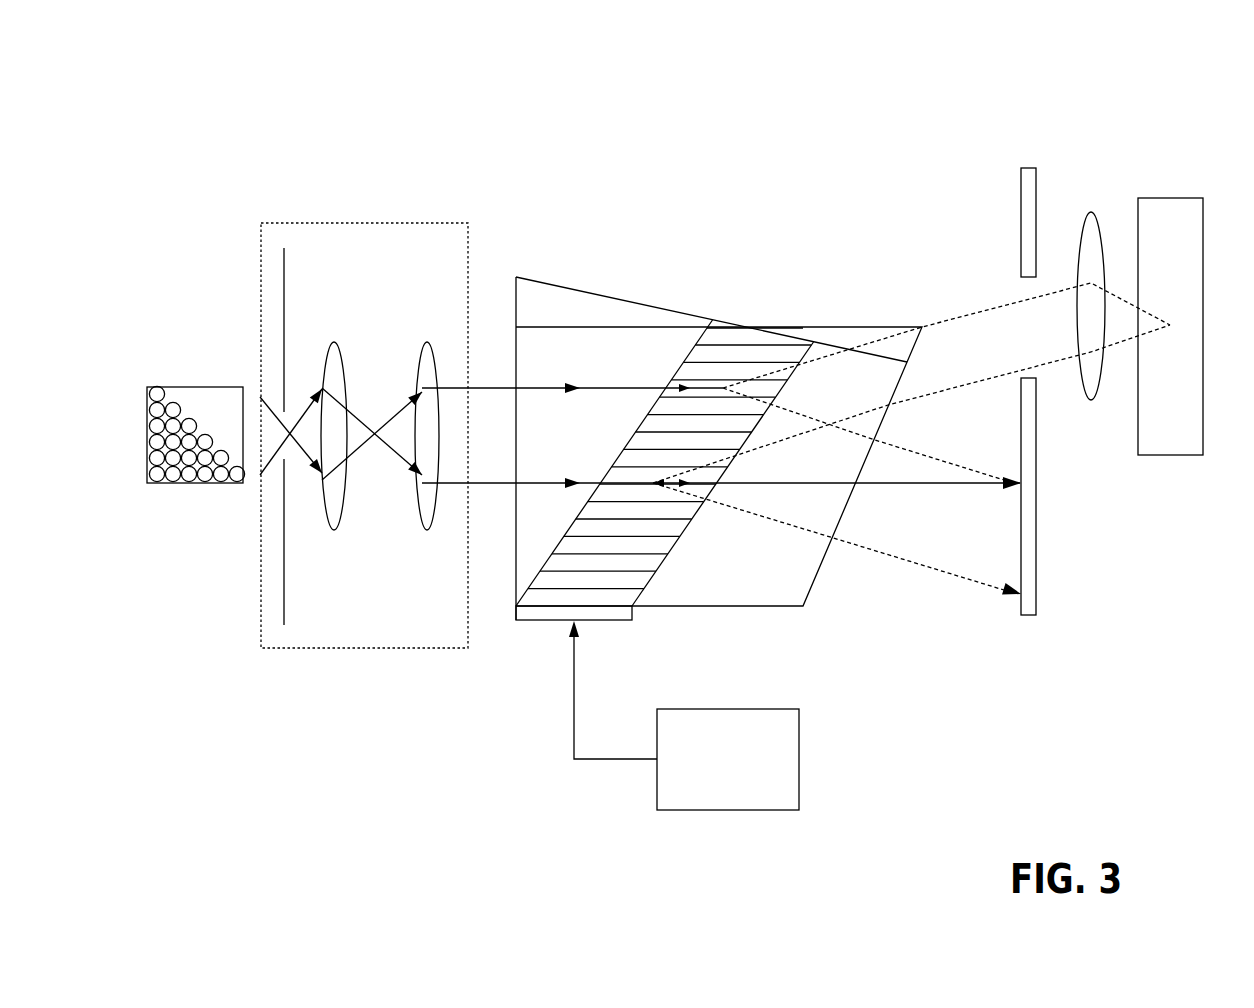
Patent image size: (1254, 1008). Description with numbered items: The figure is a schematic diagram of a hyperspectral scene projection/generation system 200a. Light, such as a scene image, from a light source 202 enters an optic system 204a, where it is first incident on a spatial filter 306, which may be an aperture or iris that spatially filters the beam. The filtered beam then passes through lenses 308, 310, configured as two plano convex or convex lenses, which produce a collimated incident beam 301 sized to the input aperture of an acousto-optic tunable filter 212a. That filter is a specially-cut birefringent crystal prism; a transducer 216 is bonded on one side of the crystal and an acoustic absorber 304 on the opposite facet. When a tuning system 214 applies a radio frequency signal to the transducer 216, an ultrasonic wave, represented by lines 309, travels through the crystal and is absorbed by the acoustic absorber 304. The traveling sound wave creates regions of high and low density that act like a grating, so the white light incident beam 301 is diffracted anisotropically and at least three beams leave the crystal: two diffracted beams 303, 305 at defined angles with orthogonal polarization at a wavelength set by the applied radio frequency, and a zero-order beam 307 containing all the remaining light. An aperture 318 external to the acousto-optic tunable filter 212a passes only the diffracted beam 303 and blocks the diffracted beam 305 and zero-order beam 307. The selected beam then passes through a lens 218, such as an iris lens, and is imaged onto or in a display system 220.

The hyperspectral scene projection/generation system 200a is at (322, 140).
The light source 202 is at (197, 386).
The optic system 204a is at (364, 435).
The spatial filter 306 is at (284, 265).
The lens 308 is at (334, 343).
The lens 310 is at (427, 343).
The collimated incident beam 301 is at (529, 390).
The zero-order beam 307 is at (840, 483).
The acousto-optic tunable filter 212a is at (797, 607).
The acoustic absorber 304 is at (850, 317).
The lines 309 is at (708, 330).
The transducer 216 is at (632, 613).
The tuning system 214 is at (684, 715).
The diffracted beam 303 is at (1029, 369).
The diffracted beam 305 is at (905, 443).
The aperture 318 is at (1027, 168).
The lens 218 is at (1091, 212).
The display system 220 is at (1170, 455).